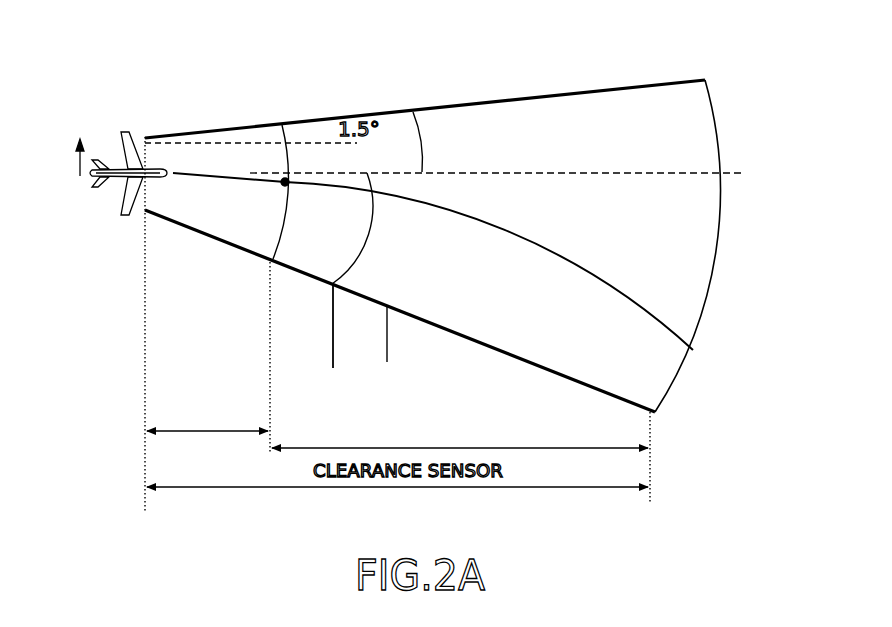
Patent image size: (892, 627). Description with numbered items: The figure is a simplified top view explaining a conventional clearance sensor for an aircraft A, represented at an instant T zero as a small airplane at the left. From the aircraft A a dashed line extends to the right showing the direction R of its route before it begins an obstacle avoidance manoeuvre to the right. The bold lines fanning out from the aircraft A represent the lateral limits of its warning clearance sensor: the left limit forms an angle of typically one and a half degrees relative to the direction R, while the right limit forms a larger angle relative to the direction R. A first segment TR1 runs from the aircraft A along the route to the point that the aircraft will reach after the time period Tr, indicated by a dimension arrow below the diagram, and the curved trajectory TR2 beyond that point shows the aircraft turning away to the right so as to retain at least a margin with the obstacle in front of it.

The aircraft A is at (125, 197).
The first trajectory segment TR1 is at (222, 176).
The trajectory TR2 is at (527, 235).
The direction of the route R is at (588, 172).
The time period Tr is at (207, 417).